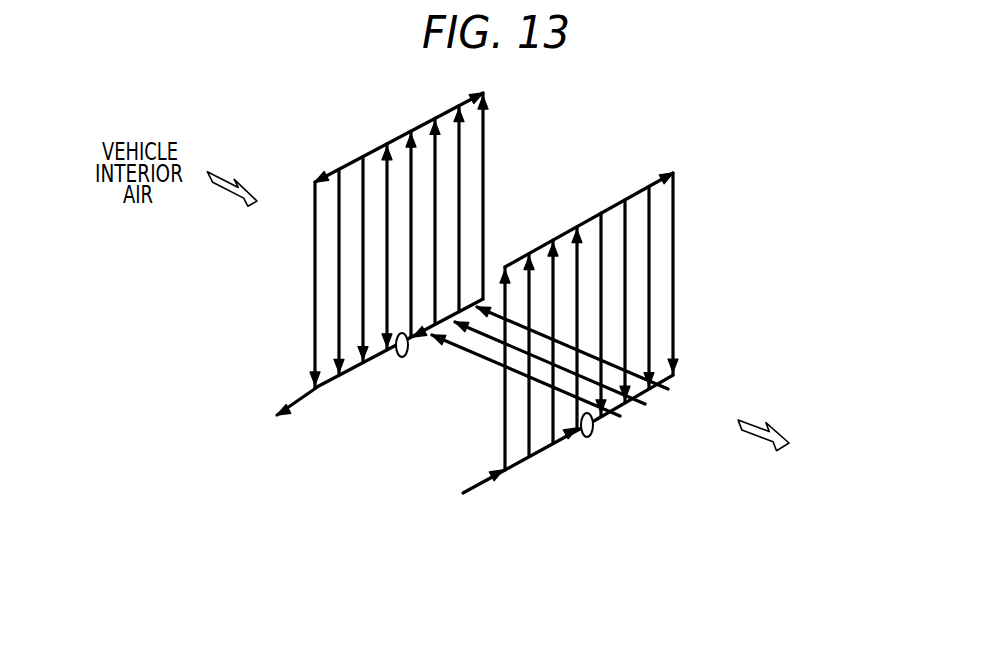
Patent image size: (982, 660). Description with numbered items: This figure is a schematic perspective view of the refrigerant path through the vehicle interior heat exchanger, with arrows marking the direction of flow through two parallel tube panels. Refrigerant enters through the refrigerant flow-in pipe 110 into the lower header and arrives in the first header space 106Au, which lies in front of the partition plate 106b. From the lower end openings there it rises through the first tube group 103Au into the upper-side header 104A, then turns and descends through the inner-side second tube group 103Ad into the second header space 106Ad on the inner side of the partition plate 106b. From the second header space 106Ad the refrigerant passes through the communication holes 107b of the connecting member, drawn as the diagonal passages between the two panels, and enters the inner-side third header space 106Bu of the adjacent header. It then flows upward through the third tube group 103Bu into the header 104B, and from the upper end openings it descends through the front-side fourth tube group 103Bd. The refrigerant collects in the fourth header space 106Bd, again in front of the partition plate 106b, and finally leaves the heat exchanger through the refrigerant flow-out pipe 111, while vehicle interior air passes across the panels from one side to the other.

The header 104B is at (387, 142).
The third tube group 103Bu is at (484, 185).
The upper-side header 104A is at (557, 232).
The third header space 106Bu is at (472, 292).
The second tube group 103Ad is at (674, 263).
The fourth tube group 103Bd is at (314, 263).
The refrigerant flow-out pipe 111 is at (296, 404).
The fourth header space 106Bd is at (365, 365).
The partition plate 106b is at (403, 358).
The communication holes 107b is at (500, 362).
The first tube group 103Au is at (503, 425).
The refrigerant flow-in pipe 110 is at (479, 484).
The first header space 106Au is at (541, 452).
The second header space 106Ad is at (637, 400).